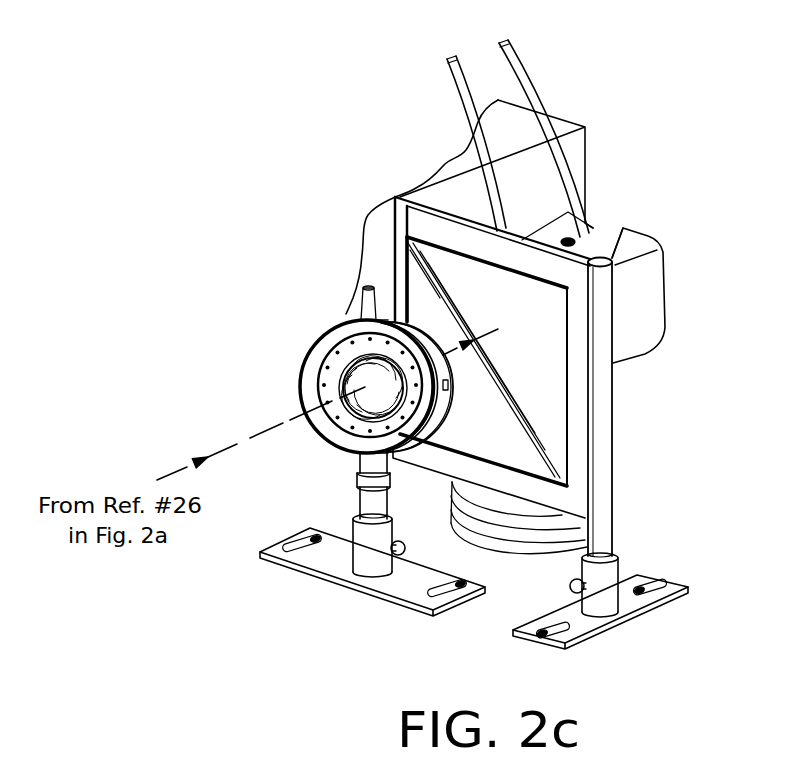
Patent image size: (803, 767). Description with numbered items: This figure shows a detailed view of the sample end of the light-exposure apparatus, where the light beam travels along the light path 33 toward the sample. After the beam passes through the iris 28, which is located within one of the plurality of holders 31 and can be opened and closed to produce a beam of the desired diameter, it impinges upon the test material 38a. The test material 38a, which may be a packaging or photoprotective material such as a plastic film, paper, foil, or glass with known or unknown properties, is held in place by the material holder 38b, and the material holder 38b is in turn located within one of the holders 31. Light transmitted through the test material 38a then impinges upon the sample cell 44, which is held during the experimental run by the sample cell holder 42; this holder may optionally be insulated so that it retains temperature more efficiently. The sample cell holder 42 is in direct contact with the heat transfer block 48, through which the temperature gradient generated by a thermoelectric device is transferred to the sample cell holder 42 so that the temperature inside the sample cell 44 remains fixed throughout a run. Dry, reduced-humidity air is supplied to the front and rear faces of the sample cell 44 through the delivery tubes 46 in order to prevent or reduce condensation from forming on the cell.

The iris 28 is at (357, 378).
The holder 31 is at (413, 587).
The light path 33 is at (237, 442).
The test material 38a is at (418, 278).
The material holder 38b is at (608, 418).
The sample cell holder 42 is at (648, 280).
The sample cell 44 is at (565, 240).
The delivery tubes 46 is at (498, 40).
The heat transfer block 48 is at (390, 200).